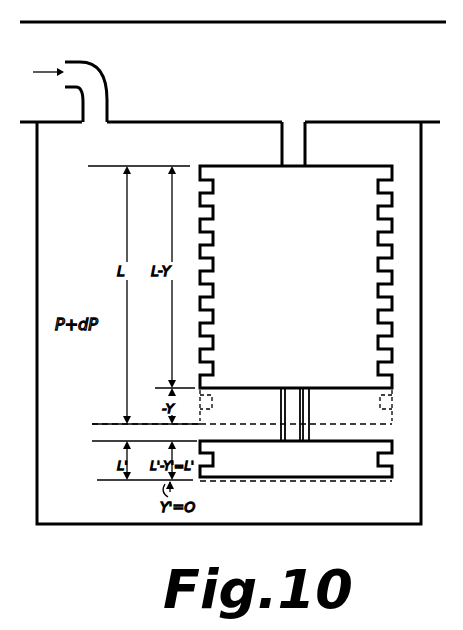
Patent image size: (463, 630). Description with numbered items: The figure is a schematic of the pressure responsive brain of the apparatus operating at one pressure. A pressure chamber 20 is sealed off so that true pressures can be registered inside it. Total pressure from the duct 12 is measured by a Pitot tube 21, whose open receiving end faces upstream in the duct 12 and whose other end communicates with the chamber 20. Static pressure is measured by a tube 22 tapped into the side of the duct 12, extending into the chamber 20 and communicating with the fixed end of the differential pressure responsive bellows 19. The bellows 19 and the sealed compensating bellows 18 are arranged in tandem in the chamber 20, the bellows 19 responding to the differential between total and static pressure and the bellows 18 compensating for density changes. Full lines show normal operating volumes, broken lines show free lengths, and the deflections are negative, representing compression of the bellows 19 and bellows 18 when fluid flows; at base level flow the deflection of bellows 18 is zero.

The duct 12 is at (272, 30).
The sealed bellows 18 is at (392, 450).
The differential pressure responsive bellows 19 is at (373, 168).
The pressure chamber 20 is at (76, 516).
The Pitot tube 21 is at (87, 75).
The tube 22 is at (294, 128).